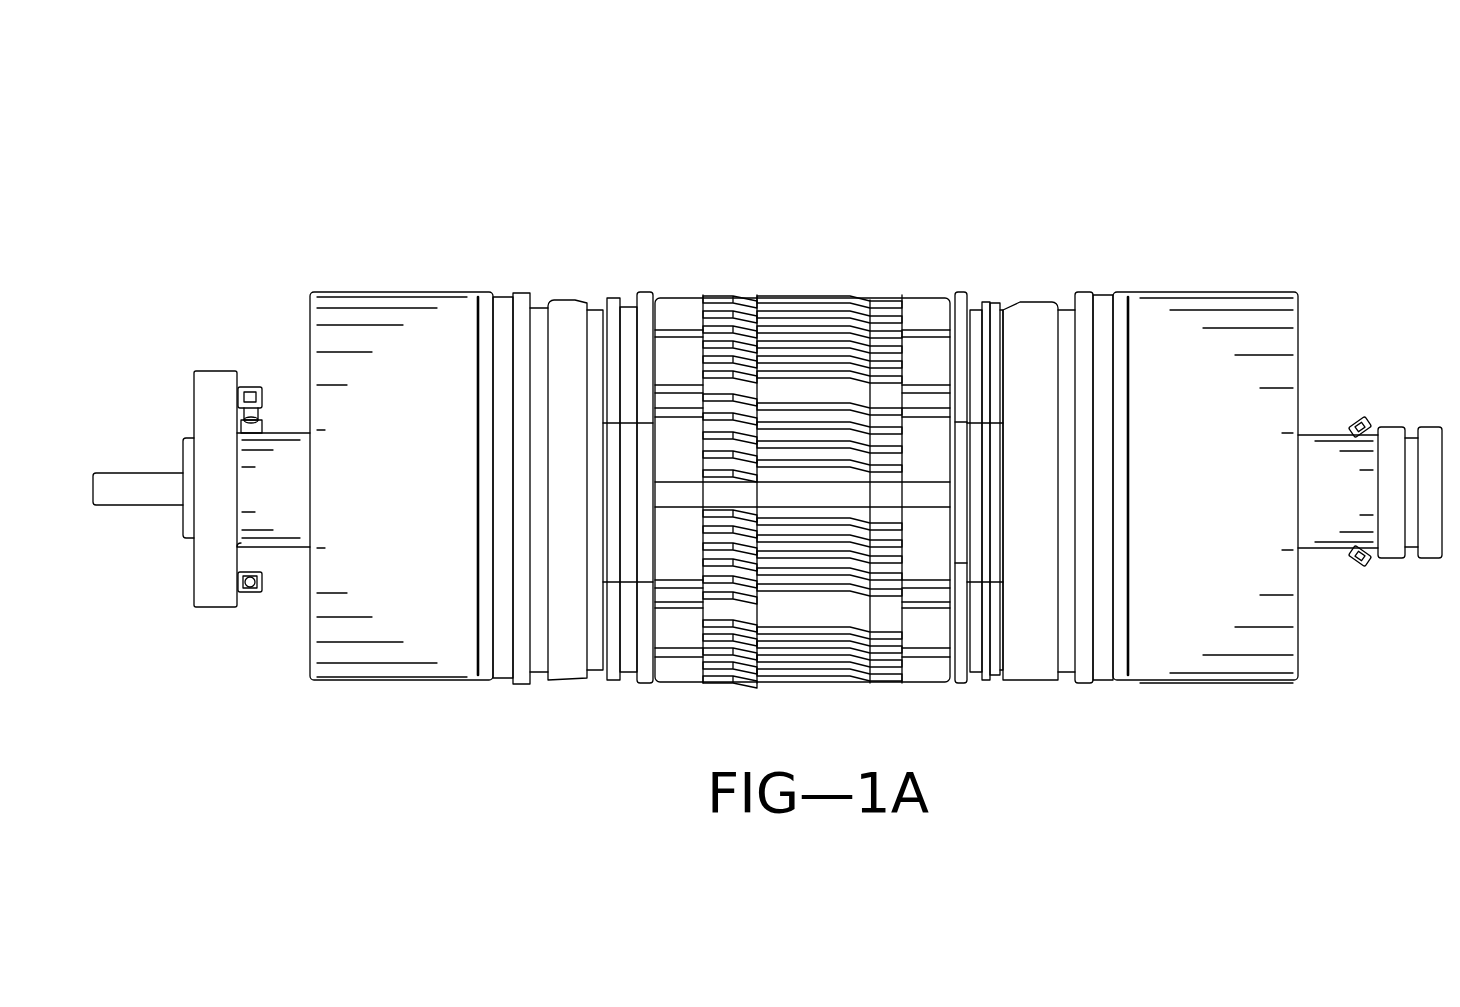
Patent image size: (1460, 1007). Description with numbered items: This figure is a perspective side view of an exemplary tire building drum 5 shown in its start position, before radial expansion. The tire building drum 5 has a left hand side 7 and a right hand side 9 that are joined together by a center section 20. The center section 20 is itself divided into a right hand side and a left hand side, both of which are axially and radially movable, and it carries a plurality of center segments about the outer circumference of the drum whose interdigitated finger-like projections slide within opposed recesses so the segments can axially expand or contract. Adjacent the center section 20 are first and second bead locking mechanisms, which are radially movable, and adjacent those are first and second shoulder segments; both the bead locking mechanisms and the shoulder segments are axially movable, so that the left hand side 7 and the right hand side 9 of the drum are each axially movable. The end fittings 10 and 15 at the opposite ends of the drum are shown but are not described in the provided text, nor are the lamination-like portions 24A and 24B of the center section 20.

The tire building drum 5 is at (160, 165).
The left hand side 7 is at (378, 272).
The right hand side 9 is at (1232, 272).
The front end plate 10 is at (217, 385).
The rear coupling 15 is at (1394, 440).
The center section 20 is at (790, 207).
The first lamination stack 24A is at (752, 310).
The second lamination stack 24B is at (855, 310).